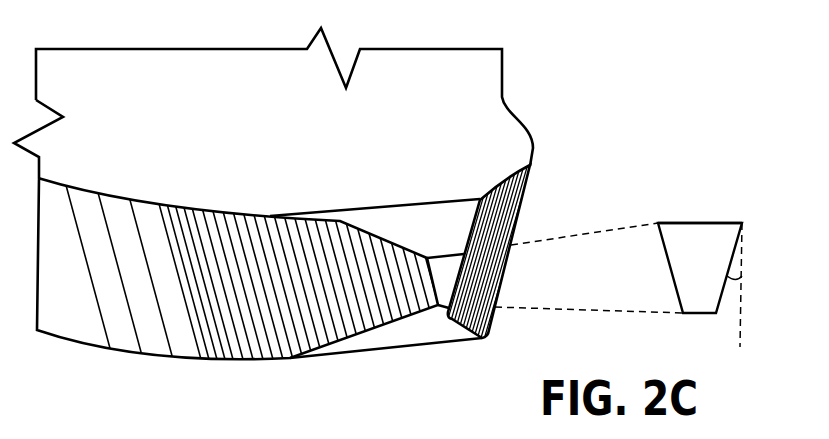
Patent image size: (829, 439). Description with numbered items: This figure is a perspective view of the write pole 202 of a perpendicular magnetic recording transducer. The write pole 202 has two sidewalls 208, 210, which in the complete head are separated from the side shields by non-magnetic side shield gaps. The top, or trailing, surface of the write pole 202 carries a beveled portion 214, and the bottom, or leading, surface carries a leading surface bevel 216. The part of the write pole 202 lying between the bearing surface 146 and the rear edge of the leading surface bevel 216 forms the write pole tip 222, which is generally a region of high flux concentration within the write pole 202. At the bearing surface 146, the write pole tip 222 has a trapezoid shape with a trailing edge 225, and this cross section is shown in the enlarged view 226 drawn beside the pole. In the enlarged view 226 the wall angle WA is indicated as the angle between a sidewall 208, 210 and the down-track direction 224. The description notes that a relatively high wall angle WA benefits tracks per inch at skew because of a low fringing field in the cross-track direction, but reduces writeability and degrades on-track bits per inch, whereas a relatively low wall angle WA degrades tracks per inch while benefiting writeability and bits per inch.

The write pole 202 is at (382, 88).
The sidewall 208 is at (356, 285).
The beveled portion 214 is at (403, 225).
The sidewall 210 is at (483, 220).
The bearing surface 146 is at (440, 272).
The leading surface bevel 216 is at (435, 328).
The write pole tip 222 is at (433, 182).
The enlarged view 226 is at (673, 212).
The trailing edge 225 is at (703, 222).
The down-track direction 224 is at (742, 248).
The wall angle WA is at (732, 296).